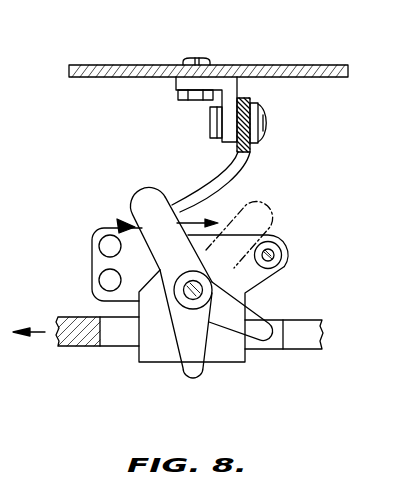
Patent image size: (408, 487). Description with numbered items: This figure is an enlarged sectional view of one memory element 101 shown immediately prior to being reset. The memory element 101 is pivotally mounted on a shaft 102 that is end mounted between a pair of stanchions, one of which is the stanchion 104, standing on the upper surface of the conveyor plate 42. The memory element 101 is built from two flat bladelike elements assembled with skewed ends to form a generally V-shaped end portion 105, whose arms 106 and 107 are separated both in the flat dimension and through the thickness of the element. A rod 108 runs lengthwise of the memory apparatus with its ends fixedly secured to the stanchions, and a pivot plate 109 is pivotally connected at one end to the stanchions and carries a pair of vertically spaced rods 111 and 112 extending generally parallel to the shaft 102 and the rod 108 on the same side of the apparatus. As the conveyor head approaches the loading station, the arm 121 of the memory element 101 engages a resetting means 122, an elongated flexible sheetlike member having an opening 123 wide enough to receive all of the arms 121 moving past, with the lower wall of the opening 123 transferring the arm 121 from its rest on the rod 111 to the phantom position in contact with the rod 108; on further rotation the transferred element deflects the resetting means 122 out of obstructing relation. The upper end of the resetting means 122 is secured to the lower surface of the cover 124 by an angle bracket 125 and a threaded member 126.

The conveyor plate 42 is at (312, 333).
The memory element 101 is at (147, 183).
The shaft 102 is at (190, 293).
The stanchion 104 is at (148, 343).
The V-shaped end portion 105 is at (213, 322).
The arm 106 is at (193, 379).
The arm 107 is at (246, 321).
The rod 108 is at (272, 256).
The pivot plate 109 is at (92, 258).
The rod 111 is at (105, 244).
The rod 112 is at (110, 280).
The arm 121 is at (131, 203).
The resetting means 122 is at (251, 152).
The opening 123 is at (246, 148).
The cover 124 is at (99, 63).
The angle bracket 125 is at (238, 92).
The threaded member 126 is at (198, 57).